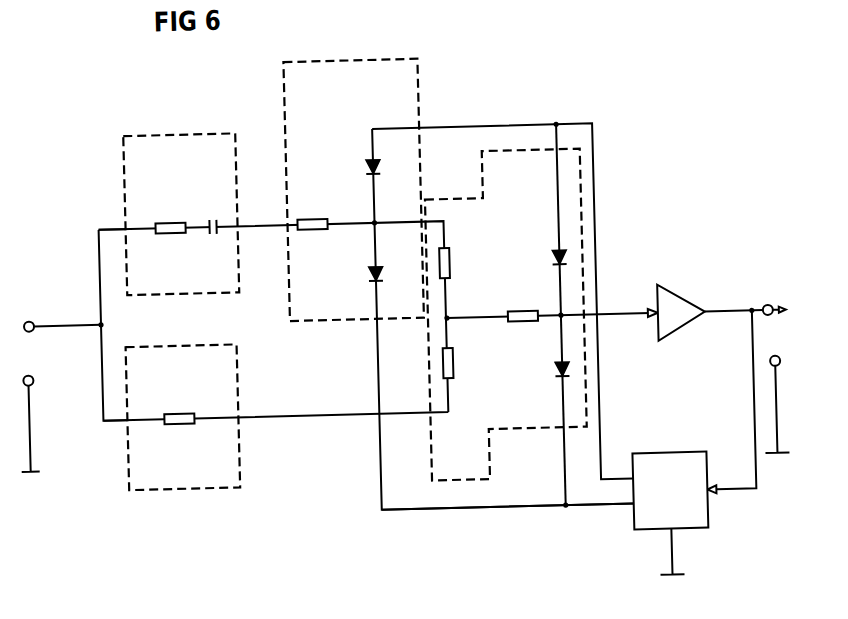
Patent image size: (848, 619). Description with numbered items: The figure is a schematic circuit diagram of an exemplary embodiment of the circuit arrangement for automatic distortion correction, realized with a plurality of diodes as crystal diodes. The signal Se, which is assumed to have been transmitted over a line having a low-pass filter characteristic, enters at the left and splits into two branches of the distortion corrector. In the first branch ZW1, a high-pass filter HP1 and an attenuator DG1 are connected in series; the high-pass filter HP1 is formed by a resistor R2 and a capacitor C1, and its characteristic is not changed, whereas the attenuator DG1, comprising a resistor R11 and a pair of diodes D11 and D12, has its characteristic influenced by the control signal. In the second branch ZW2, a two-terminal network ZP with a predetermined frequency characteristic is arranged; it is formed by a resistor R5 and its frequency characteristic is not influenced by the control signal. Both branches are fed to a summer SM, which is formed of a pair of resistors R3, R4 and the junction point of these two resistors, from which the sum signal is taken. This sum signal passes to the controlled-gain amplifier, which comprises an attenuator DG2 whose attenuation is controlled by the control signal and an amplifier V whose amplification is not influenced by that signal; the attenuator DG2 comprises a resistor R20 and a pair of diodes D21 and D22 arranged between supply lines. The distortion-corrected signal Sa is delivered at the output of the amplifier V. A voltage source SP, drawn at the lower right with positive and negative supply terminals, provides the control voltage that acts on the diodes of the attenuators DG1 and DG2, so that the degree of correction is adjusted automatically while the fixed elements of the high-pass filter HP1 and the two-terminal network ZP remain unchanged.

The signal Se is at (30, 396).
The distortion-corrected signal Sa is at (776, 378).
The first branch ZW1 is at (99, 212).
The second branch ZW2 is at (102, 436).
The high-pass filter HP1 is at (180, 197).
The two-terminal network ZP is at (182, 401).
The attenuator DG1 is at (355, 172).
The attenuator DG2 is at (505, 303).
The resistor R2 is at (170, 245).
The capacitor C1 is at (212, 210).
The resistor R5 is at (179, 436).
The resistor R11 is at (313, 241).
The resistor R3 is at (459, 262).
The resistor R4 is at (462, 364).
The resistor R20 is at (523, 334).
The diode D11 is at (396, 275).
The diode D12 is at (395, 172).
The diode D21 is at (541, 372).
The diode D22 is at (538, 260).
The amplifier V is at (681, 312).
The voltage source SP is at (655, 513).
The summer SM is at (507, 490).